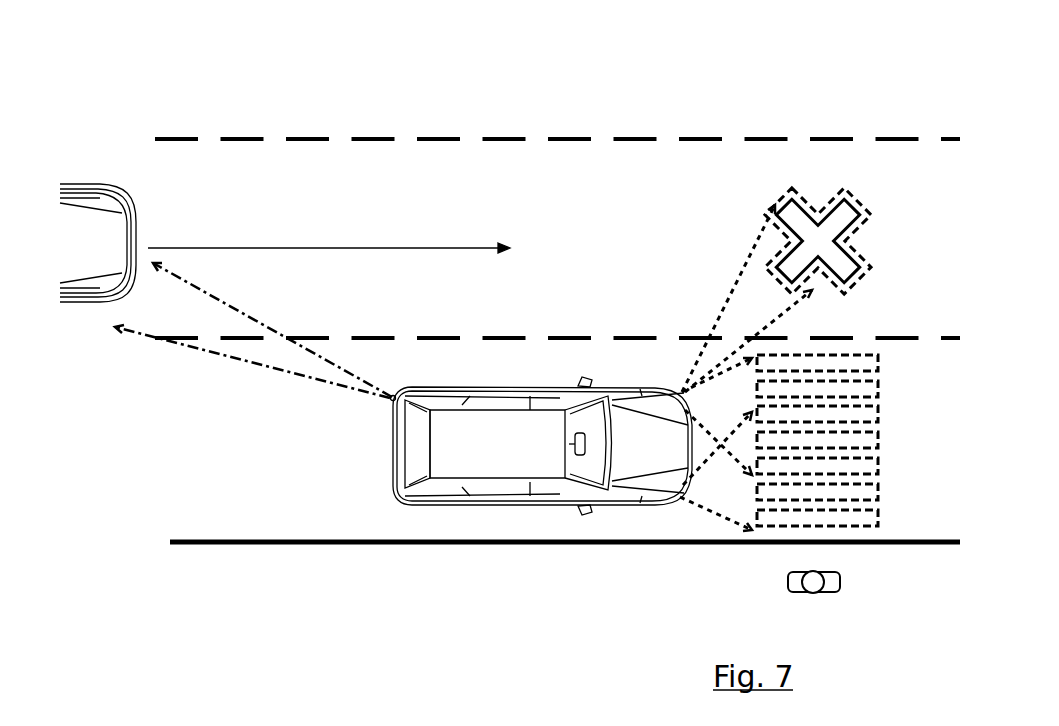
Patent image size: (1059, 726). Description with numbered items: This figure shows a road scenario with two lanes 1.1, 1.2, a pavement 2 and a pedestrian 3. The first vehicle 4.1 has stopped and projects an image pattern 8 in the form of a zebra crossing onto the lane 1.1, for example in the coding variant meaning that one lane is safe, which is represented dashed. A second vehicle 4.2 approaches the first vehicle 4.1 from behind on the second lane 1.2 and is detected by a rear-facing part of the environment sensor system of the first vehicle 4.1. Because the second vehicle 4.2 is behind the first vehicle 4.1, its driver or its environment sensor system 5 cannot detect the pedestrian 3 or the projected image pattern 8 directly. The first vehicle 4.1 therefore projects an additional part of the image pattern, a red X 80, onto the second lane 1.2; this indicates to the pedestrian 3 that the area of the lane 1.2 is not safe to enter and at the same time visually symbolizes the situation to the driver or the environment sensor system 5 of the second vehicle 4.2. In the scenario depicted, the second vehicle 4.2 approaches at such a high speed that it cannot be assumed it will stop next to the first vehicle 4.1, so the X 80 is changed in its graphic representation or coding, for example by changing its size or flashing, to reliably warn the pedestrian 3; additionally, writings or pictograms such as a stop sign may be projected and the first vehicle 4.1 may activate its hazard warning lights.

The lane 1.1 is at (960, 516).
The lane 1.2 is at (948, 313).
The pavement 2 is at (636, 613).
The pedestrian 3 is at (835, 587).
The first vehicle 4.1 is at (510, 450).
The second vehicle 4.2 is at (90, 235).
The environment sensor system 5 is at (393, 398).
The image pattern 8 is at (830, 458).
The X 80 is at (823, 247).